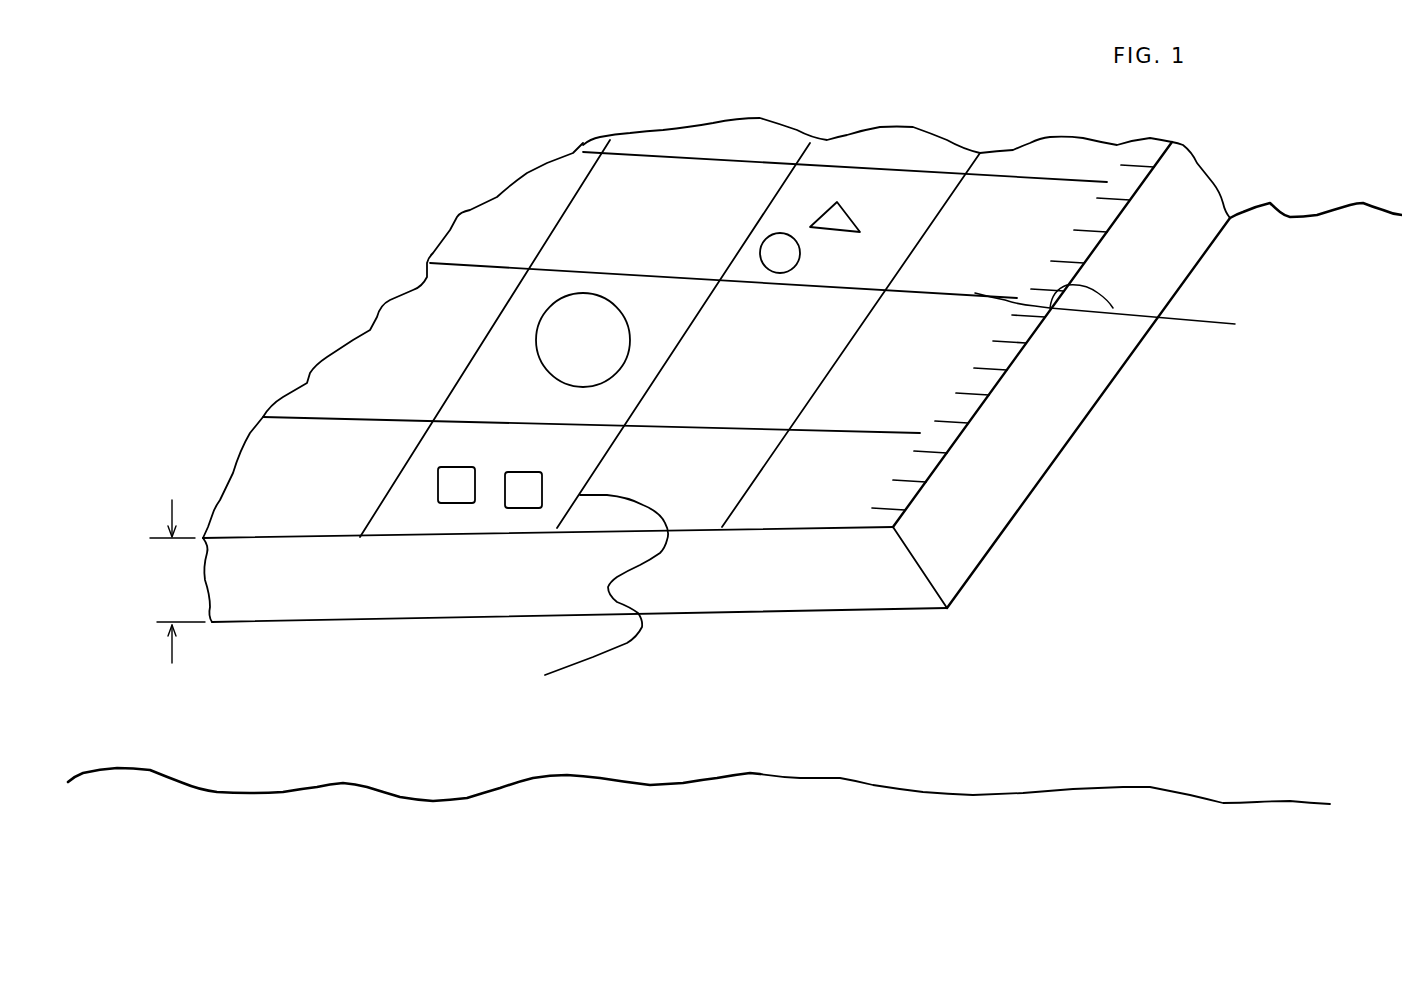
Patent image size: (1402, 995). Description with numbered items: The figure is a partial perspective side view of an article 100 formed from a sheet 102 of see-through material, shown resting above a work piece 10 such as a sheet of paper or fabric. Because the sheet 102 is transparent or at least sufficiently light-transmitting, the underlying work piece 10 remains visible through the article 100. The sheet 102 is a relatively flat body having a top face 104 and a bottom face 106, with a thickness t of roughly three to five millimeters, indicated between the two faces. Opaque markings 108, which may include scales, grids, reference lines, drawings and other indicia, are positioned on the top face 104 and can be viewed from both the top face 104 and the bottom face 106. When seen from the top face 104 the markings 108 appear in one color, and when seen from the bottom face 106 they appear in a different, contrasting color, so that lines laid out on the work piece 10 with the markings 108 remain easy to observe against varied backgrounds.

The work piece 10 is at (1145, 787).
The article 100 is at (392, 182).
The sheet 102 is at (1187, 141).
The top face 104 is at (647, 193).
The bottom face 106 is at (812, 619).
The markings 108 is at (894, 491).